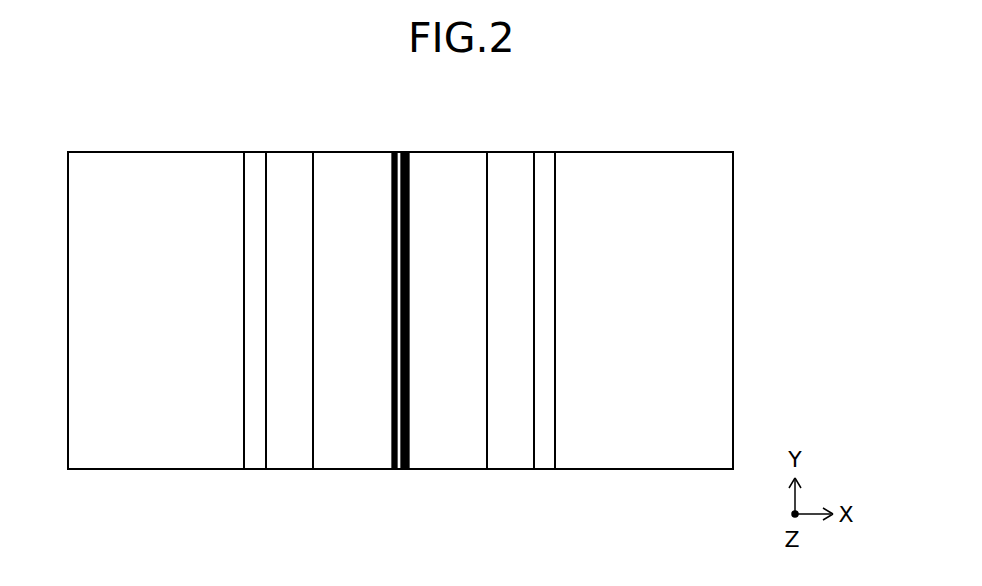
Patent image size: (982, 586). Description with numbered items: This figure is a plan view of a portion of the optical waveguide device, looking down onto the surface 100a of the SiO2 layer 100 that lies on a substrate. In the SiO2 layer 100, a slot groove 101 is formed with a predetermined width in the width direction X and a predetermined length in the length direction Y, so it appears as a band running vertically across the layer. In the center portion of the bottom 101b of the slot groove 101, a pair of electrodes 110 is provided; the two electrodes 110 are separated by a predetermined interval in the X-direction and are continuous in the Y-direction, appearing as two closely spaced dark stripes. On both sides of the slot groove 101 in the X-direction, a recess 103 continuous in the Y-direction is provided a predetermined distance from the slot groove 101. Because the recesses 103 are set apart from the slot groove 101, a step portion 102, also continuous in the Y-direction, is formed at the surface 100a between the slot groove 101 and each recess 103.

The SiO2 layer 100 is at (448, 310).
The surface of the SiO2 layer 100a is at (707, 231).
The slot groove 101 is at (451, 307).
The bottom of the slot groove 101b is at (445, 452).
The step portion 102 is at (287, 177).
The recess 103 is at (256, 180).
The pair of electrodes 110 is at (405, 152).